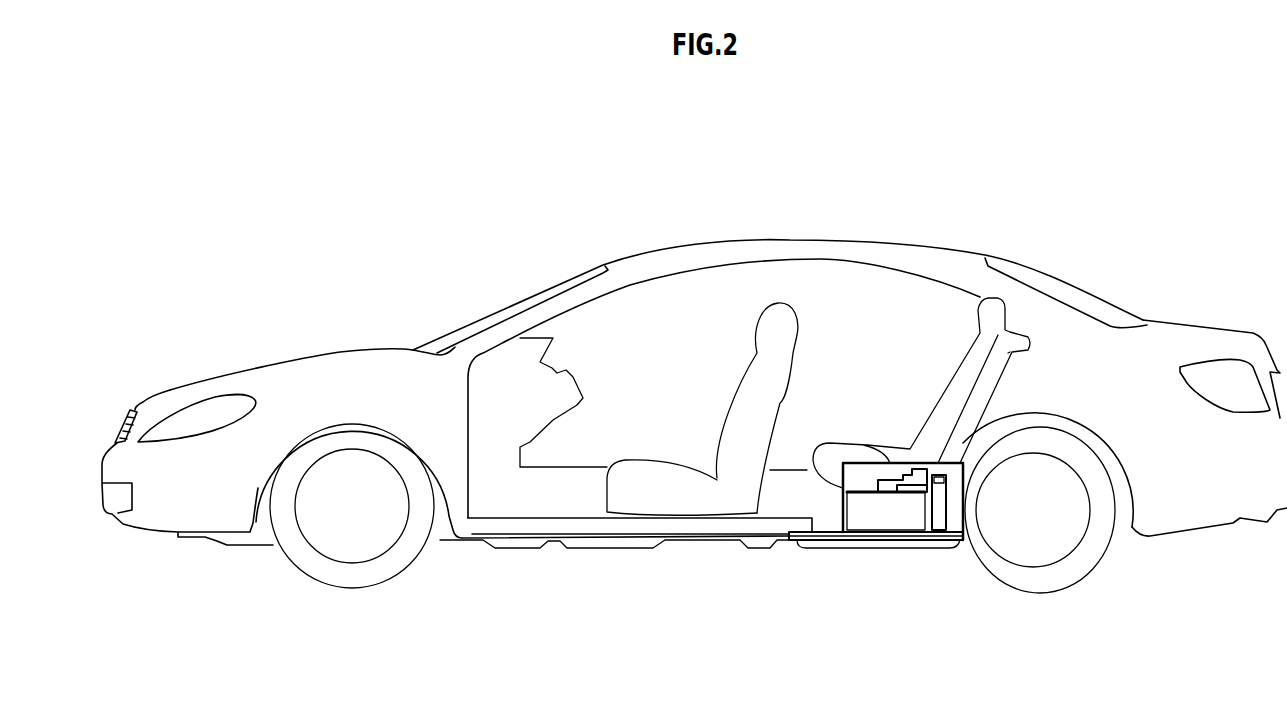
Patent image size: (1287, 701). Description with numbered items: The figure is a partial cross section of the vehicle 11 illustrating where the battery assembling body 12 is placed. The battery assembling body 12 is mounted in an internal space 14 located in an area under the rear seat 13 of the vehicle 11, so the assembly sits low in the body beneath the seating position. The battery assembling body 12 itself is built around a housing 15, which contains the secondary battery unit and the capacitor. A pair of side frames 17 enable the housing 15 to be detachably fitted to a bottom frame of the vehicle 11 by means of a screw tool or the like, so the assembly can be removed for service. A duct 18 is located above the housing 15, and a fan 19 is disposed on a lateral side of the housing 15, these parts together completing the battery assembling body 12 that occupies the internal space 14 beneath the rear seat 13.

The vehicle 11 is at (471, 233).
The battery assembling body 12 is at (829, 560).
The rear seat 13 is at (950, 378).
The internal space 14 is at (843, 487).
The housing 15 is at (920, 522).
The side frame 17 is at (882, 535).
The duct 18 is at (890, 478).
The fan 19 is at (940, 515).